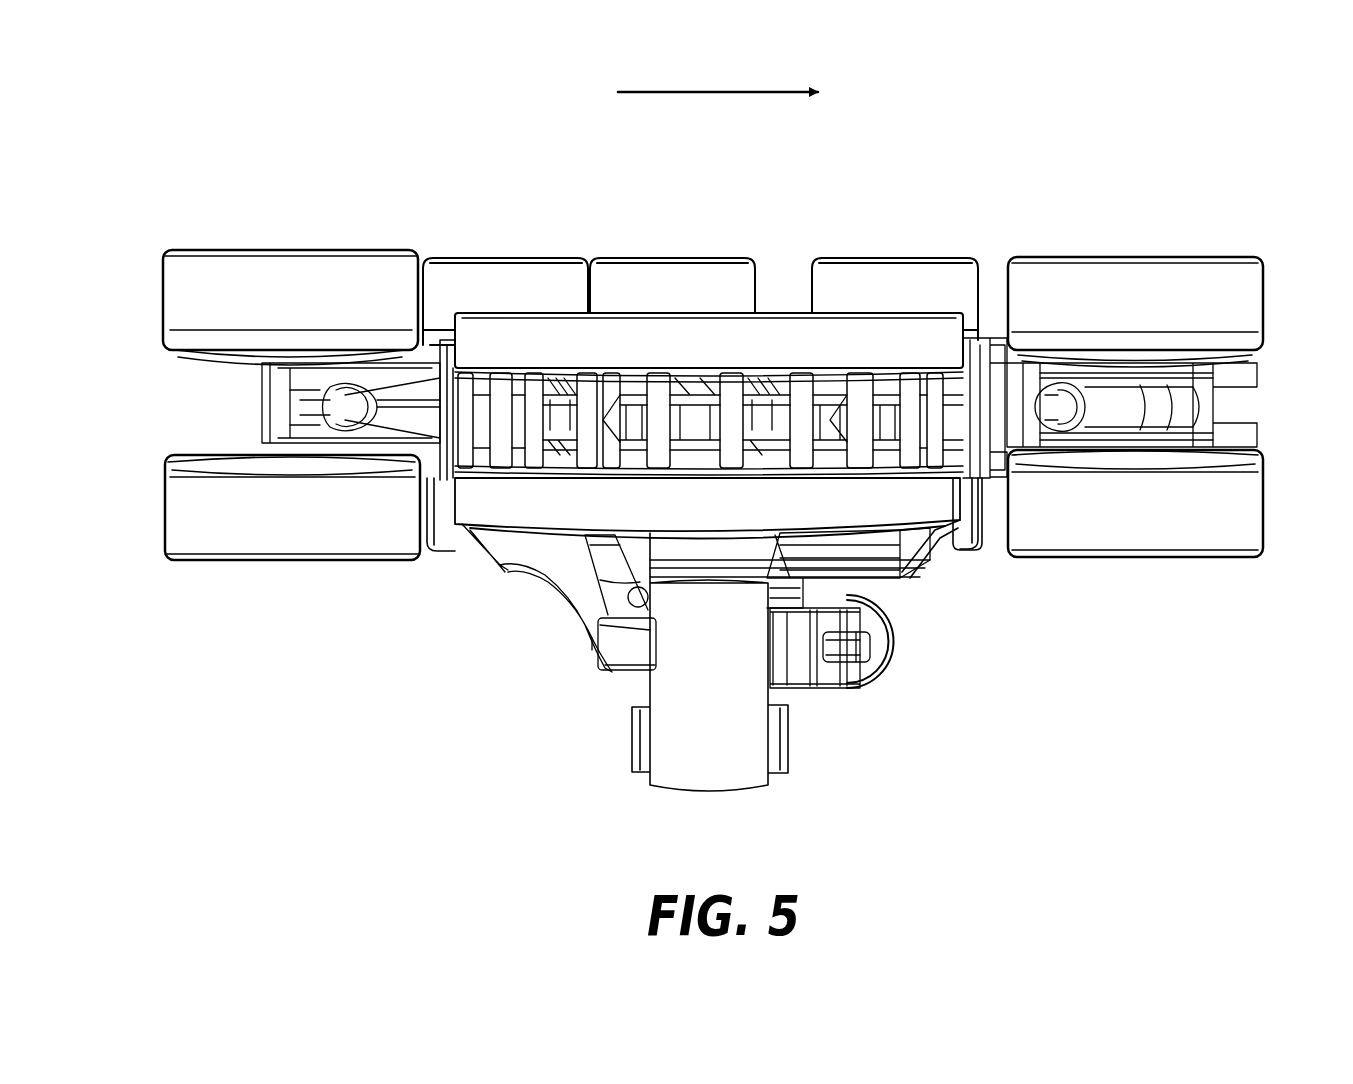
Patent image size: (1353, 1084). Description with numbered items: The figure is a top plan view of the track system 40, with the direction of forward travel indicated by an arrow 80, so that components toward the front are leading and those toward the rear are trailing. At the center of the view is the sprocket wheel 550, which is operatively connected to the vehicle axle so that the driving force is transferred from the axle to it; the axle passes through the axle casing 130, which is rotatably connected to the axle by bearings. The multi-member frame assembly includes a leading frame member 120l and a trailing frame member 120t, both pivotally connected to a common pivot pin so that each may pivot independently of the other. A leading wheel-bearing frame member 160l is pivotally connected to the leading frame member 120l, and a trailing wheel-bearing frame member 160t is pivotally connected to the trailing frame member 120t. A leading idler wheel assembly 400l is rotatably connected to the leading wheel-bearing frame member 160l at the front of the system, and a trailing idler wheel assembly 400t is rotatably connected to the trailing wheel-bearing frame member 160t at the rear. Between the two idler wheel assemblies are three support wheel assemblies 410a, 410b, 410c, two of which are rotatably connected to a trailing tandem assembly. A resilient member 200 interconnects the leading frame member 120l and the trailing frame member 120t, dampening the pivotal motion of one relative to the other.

The track system 40 is at (180, 128).
The arrow 80 is at (712, 93).
The trailing idler wheel assembly 400t is at (288, 248).
The support wheel assembly 410c is at (504, 248).
The support wheel assembly 410b is at (644, 248).
The support wheel assembly 410a is at (886, 248).
The sprocket wheel 550 is at (778, 332).
The leading frame member 120l is at (968, 350).
The leading idler wheel assembly 400l is at (1140, 248).
The trailing wheel-bearing frame member 160t is at (388, 418).
The trailing frame member 120t is at (516, 548).
The leading wheel-bearing frame member 160l is at (1005, 422).
The resilient member 200 is at (868, 690).
The axle casing 130 is at (750, 766).